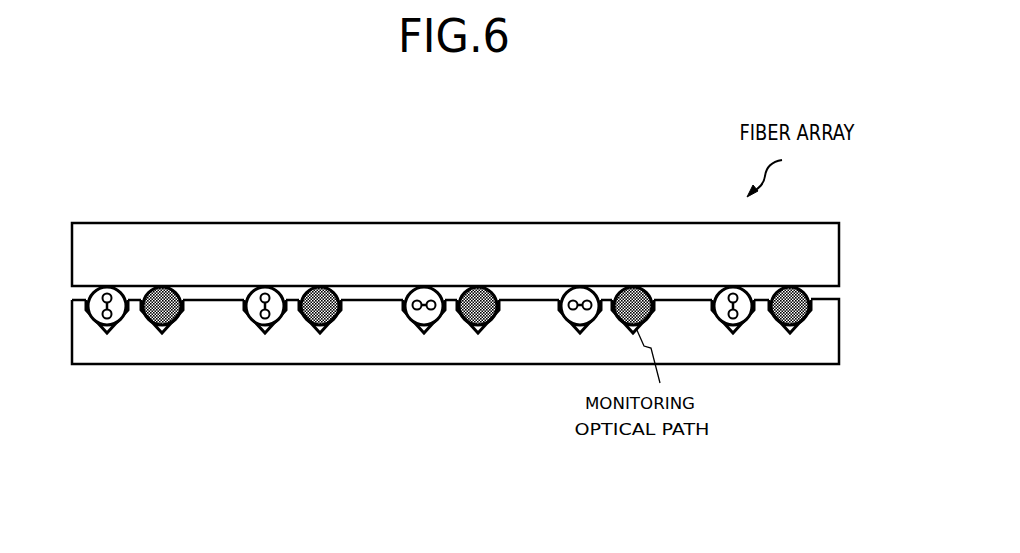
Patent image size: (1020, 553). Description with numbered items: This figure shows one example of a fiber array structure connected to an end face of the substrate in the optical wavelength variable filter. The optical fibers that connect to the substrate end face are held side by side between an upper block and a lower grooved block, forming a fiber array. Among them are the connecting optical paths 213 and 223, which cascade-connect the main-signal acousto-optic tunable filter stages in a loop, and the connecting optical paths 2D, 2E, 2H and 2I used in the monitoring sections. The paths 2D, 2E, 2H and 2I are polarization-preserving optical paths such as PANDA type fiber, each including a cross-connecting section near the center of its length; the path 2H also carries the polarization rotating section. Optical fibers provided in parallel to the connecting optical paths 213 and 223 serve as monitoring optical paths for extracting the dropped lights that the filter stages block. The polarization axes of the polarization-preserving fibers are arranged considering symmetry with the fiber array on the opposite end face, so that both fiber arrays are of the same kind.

The connecting optical path 2I is at (105, 328).
The connecting optical path 213 is at (263, 328).
The connecting optical path 2D is at (323, 328).
The connecting optical path 223 is at (420, 328).
The connecting optical path 2E is at (481, 328).
The connecting optical path 2H is at (730, 328).